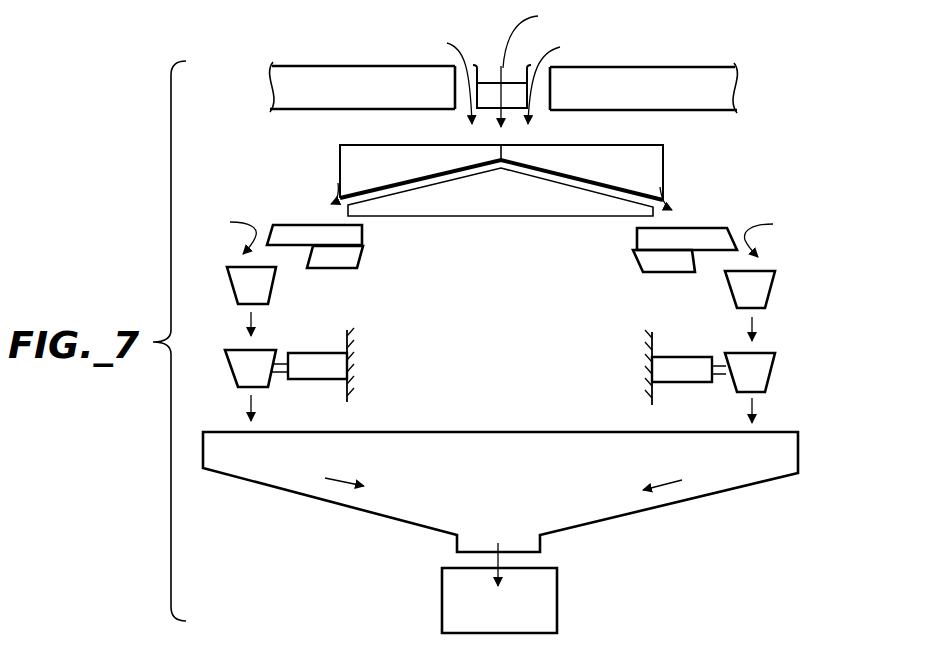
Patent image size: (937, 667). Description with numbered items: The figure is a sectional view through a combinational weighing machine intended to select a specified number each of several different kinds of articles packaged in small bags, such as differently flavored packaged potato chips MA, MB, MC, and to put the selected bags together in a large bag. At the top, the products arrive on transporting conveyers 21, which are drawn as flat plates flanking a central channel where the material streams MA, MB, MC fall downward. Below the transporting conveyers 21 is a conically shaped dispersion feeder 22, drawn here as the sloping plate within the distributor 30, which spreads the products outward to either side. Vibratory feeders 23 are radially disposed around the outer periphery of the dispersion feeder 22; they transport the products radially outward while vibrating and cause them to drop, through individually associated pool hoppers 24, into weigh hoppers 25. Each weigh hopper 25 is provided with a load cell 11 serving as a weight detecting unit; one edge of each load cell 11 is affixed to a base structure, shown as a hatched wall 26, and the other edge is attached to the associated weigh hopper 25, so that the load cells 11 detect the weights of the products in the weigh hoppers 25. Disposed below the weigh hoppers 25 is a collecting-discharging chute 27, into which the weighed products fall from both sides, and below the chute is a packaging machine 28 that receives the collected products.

The load cell 11 is at (325, 352).
The transporting conveyer 21 is at (292, 66).
The dispersion feeder 22 is at (570, 195).
The vibratory feeder 23 is at (300, 225).
The pool hopper 24 is at (268, 292).
The weigh hopper 25 is at (268, 380).
The wall / support 26 is at (358, 372).
The collecting-discharging chute 27 is at (375, 517).
The packaging machine 28 is at (442, 598).
The distributor 30 is at (665, 152).
The packaged potato chips MA is at (670, 145).
The packaged potato chips MB is at (523, 68).
The packaged potato chips MC is at (333, 142).